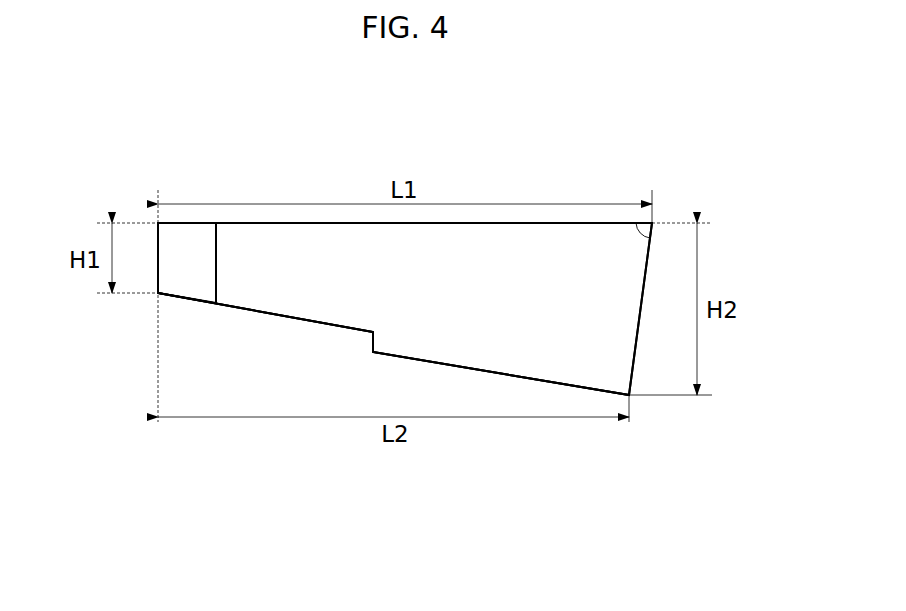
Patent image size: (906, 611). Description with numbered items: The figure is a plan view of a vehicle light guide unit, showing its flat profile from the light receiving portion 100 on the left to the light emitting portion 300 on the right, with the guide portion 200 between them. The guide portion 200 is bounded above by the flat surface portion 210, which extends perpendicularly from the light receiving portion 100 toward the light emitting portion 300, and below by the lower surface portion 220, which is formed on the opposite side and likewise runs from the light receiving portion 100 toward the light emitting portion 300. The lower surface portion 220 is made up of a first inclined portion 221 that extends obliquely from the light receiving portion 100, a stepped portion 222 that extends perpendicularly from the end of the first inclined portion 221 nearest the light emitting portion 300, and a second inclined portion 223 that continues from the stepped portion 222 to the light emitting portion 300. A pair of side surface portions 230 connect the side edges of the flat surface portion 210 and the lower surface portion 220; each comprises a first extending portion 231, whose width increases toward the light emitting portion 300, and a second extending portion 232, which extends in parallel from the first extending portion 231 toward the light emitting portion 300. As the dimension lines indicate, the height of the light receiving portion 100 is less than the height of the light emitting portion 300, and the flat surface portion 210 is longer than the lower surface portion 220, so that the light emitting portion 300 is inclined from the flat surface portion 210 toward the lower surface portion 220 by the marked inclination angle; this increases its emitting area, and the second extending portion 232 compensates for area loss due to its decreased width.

The light receiving portion 100 is at (151, 276).
The guide portion 200 is at (558, 219).
The flat surface portion 210 is at (455, 222).
The lower surface portion 220 is at (290, 497).
The first inclined portion 221 is at (293, 318).
The stepped portion 222 is at (371, 338).
The second inclined portion 223 is at (510, 377).
The side surface portions 230 is at (273, 128).
The first extending portion 231 is at (192, 250).
The second extending portion 232 is at (303, 252).
The light emitting portion 300 is at (645, 350).